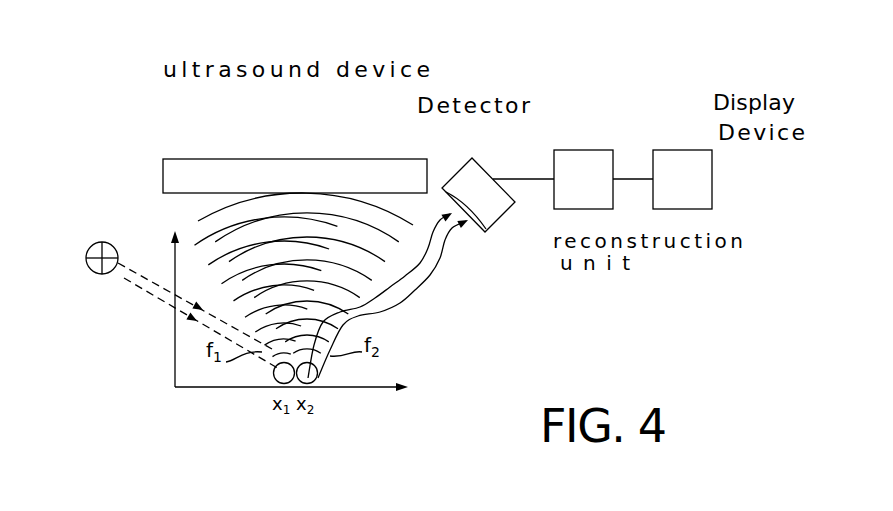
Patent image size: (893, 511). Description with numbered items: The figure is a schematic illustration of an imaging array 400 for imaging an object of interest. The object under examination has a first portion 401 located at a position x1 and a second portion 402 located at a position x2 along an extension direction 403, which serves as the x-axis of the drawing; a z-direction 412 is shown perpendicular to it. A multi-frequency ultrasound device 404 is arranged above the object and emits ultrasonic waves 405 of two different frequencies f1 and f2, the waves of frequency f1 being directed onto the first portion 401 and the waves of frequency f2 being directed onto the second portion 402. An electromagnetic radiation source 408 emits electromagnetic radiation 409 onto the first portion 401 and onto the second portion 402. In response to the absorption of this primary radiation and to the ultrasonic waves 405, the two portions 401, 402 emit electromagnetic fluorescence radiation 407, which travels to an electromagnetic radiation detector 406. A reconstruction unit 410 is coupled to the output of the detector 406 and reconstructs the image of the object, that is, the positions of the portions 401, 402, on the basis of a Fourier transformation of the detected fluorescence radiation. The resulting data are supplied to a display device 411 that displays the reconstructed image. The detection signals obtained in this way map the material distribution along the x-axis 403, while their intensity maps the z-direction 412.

The imaging array 400 is at (685, 73).
The first portion 401 is at (278, 383).
The second portion 402 is at (313, 383).
The extension direction 403 is at (386, 393).
The multi-frequency ultrasound device 404 is at (287, 159).
The ultrasonic waves 405 is at (203, 222).
The electromagnetic radiation detector 406 is at (465, 168).
The electromagnetic fluorescence radiation 407 is at (441, 258).
The electromagnetic radiation source 408 is at (88, 246).
The electromagnetic radiation 409 is at (143, 278).
The reconstruction unit 410 is at (586, 150).
The display device 411 is at (681, 150).
The z-direction 412 is at (175, 358).